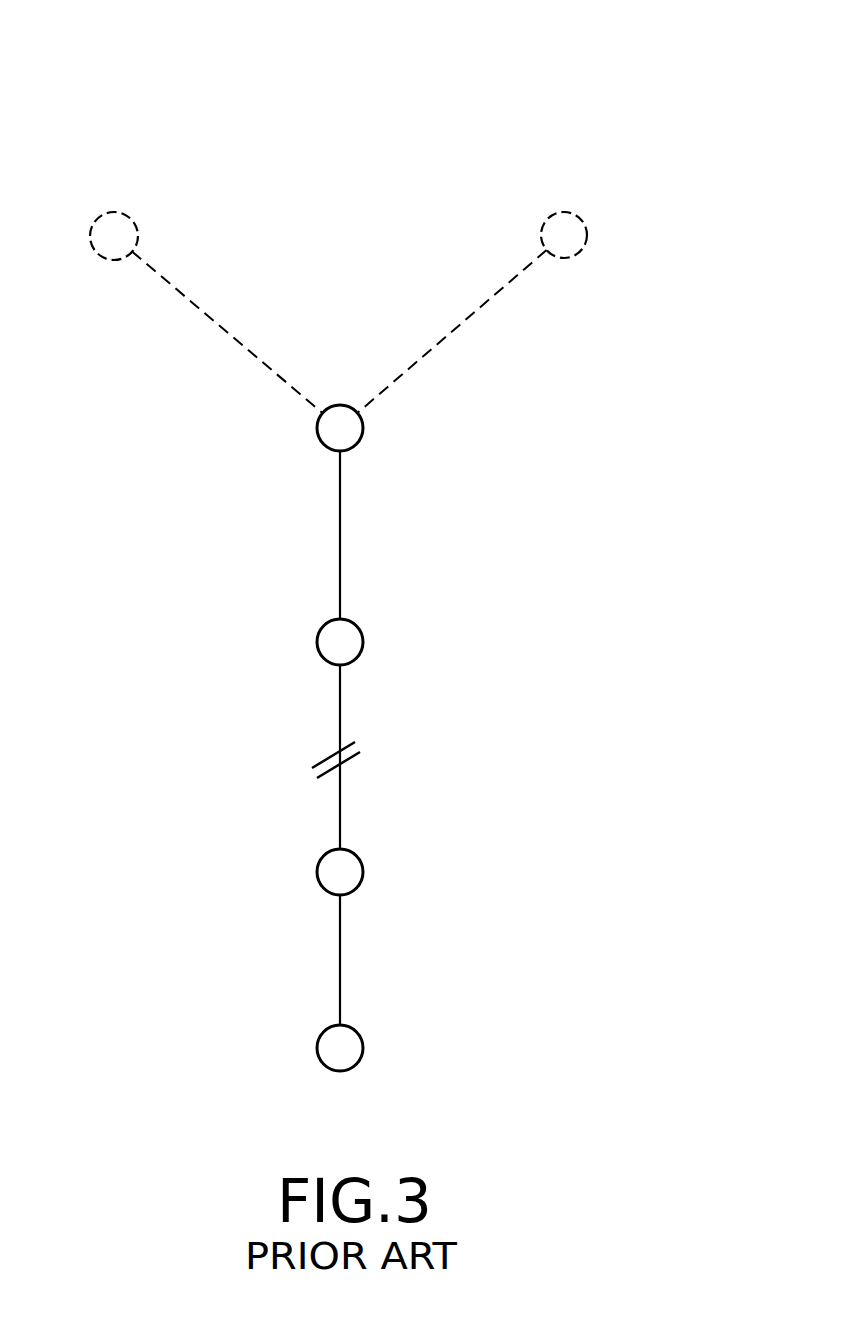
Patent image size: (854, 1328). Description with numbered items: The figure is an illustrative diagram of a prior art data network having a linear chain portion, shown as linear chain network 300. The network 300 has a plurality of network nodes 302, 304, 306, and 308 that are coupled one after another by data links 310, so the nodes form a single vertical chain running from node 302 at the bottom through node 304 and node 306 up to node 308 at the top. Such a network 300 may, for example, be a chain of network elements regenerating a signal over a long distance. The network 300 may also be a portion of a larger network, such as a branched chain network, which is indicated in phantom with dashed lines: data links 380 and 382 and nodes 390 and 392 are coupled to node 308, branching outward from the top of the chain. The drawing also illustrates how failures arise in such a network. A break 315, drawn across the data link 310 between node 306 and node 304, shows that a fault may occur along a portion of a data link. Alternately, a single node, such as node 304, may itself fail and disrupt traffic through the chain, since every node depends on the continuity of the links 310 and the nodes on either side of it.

The linear chain network 300 is at (600, 123).
The network node 302 is at (363, 1042).
The network node 304 is at (363, 865).
The network node 306 is at (360, 628).
The network node 308 is at (363, 430).
The data link 310 is at (340, 527).
The break 315 is at (360, 743).
The data link 380 is at (235, 340).
The data link 382 is at (458, 327).
The node 390 is at (586, 232).
The node 392 is at (133, 224).